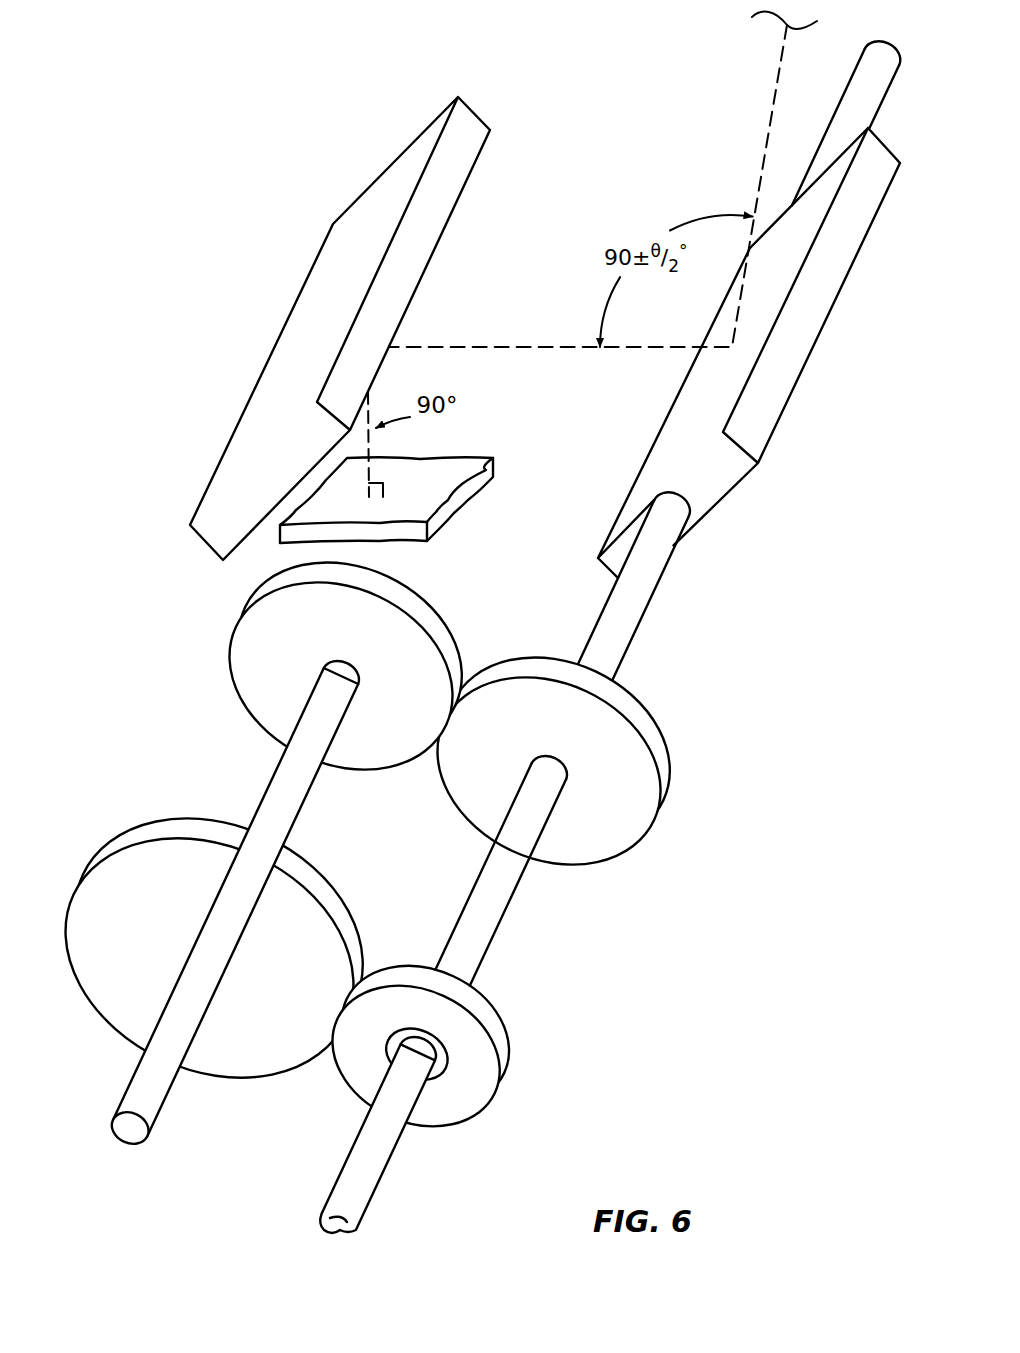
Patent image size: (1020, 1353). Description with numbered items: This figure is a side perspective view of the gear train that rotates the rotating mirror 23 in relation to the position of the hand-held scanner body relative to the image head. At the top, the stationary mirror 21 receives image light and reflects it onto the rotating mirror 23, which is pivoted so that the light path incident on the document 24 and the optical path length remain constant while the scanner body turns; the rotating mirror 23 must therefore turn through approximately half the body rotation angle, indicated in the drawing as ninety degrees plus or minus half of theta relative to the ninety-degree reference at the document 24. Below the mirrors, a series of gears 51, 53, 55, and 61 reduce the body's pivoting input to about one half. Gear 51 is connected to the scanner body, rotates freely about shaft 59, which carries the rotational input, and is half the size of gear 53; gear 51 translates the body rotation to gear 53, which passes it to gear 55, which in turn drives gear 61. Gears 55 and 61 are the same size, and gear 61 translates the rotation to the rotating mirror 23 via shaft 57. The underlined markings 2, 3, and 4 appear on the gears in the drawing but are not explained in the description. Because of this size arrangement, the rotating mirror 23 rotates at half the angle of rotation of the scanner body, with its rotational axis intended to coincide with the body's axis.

The position 2 is at (438, 1046).
The position 3 is at (445, 713).
The position 4 is at (214, 943).
The stationary mirror 21 is at (368, 210).
The rotating mirror 23 is at (767, 410).
The document 24 is at (460, 465).
The gear 51 is at (502, 1037).
The gear 53 is at (173, 818).
The gear 55 is at (240, 647).
The shaft 57 is at (643, 590).
The shaft 59 is at (385, 1152).
The gear 61 is at (657, 735).